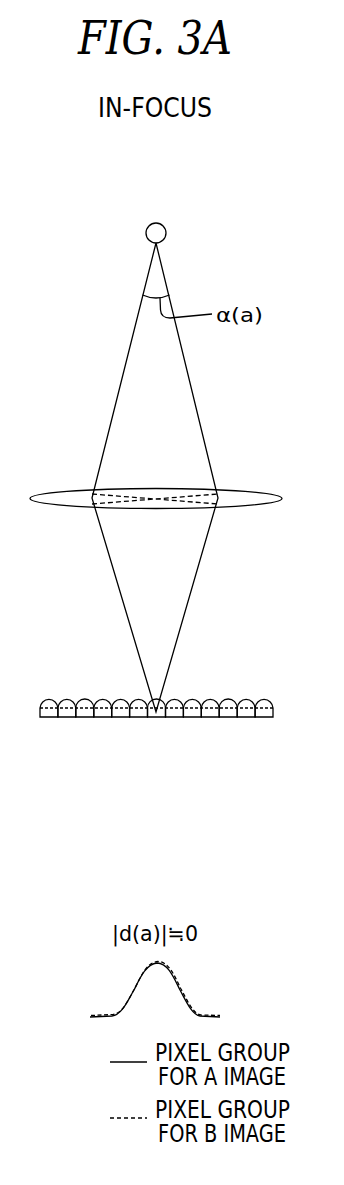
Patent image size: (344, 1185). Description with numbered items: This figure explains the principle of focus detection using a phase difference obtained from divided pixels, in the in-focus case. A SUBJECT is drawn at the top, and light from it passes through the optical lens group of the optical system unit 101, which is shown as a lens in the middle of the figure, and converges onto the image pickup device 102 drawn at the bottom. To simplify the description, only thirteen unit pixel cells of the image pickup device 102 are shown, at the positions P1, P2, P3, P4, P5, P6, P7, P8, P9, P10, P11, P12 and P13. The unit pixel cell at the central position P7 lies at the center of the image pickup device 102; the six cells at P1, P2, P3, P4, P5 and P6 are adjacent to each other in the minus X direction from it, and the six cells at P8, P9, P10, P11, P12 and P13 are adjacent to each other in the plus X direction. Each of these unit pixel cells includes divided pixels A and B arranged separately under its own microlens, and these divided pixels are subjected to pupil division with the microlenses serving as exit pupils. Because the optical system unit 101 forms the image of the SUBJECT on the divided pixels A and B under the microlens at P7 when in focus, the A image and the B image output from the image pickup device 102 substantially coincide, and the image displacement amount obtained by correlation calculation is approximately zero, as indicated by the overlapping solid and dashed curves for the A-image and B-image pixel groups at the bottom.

The optical system unit 101 is at (223, 487).
The image pickup device 102 is at (157, 692).
The subject SUBJECT is at (194, 195).
The position P1 is at (49, 726).
The position P2 is at (67, 726).
The position P3 is at (85, 726).
The position P4 is at (103, 726).
The position P5 is at (121, 726).
The position P6 is at (139, 726).
The central position P7 is at (157, 726).
The position P8 is at (175, 726).
The position P9 is at (192, 726).
The position P10 is at (210, 726).
The position P11 is at (228, 726).
The position P12 is at (246, 726).
The position P13 is at (264, 726).